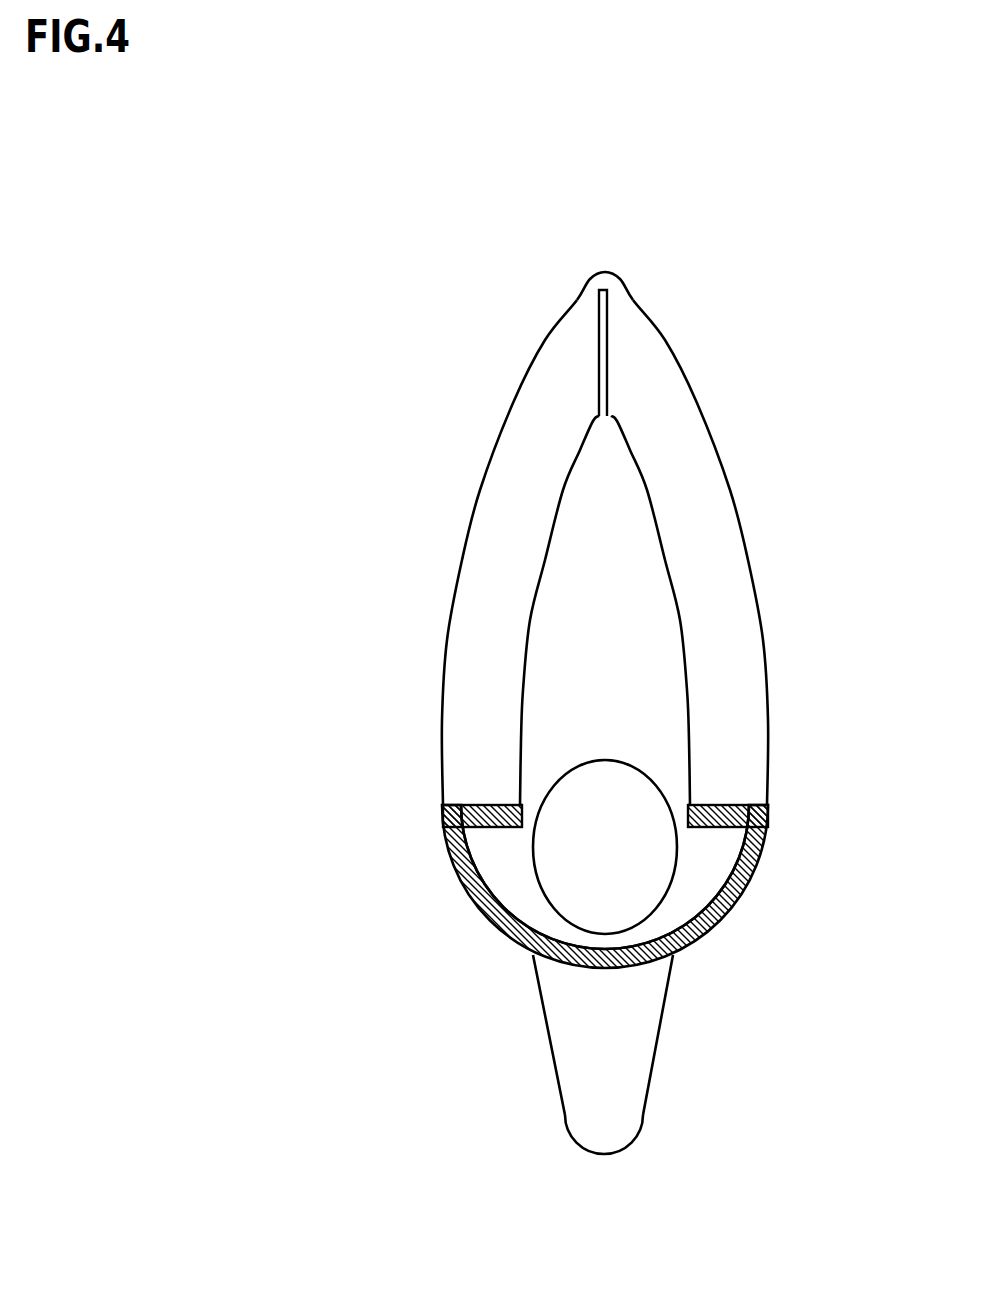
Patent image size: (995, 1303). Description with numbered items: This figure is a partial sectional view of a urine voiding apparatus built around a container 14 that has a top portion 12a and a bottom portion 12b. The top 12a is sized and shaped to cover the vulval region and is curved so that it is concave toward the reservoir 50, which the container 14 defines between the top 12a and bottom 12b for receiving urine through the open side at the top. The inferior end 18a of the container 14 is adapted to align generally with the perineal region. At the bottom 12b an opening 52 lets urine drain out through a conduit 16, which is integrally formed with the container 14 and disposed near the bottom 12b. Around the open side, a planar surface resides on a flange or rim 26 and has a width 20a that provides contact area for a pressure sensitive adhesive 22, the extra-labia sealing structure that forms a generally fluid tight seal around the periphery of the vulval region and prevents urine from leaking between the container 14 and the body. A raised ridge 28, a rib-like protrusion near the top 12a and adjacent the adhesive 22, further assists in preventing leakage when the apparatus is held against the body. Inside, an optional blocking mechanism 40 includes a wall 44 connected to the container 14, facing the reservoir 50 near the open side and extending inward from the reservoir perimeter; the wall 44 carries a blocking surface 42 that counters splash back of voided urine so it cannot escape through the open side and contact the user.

The top portion 12a is at (596, 533).
The bottom portion 12b is at (564, 1057).
The container 14 is at (644, 891).
The conduit 16 is at (563, 1112).
The inferior end 18a is at (655, 325).
The width 20a is at (524, 637).
The pressure sensitive adhesive 22 is at (507, 478).
The flange or rim 26 is at (580, 450).
The raised ridge 28 is at (765, 640).
The blocking mechanism 40 is at (523, 802).
The blocking surface 42 is at (487, 820).
The wall 44 is at (552, 817).
The reservoir 50 is at (715, 843).
The opening 52 is at (574, 900).